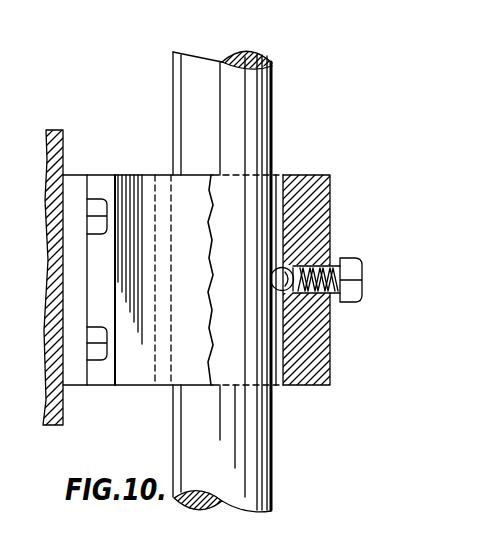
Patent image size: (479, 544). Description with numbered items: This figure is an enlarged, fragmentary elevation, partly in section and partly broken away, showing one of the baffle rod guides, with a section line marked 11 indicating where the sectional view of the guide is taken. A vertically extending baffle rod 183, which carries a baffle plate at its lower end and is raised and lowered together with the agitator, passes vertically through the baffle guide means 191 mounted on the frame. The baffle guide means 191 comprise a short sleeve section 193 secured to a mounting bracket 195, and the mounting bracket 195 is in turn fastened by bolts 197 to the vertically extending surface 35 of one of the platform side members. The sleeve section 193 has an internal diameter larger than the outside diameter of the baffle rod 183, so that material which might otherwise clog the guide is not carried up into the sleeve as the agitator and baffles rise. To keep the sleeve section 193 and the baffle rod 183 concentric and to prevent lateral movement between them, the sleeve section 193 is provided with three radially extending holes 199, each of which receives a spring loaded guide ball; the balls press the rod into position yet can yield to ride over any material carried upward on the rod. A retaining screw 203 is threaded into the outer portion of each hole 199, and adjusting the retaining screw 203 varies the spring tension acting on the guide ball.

The baffle rod 183 is at (200, 84).
The vertically extending surface 35 is at (55, 426).
The baffle guide means 191 is at (334, 208).
The sleeve section 193 is at (305, 370).
The mounting bracket 195 is at (97, 182).
The bolt 197 is at (98, 350).
The radially extending hole 199 is at (303, 293).
The retaining screw 203 is at (352, 293).
The section line 11- 11 is at (50, 279).